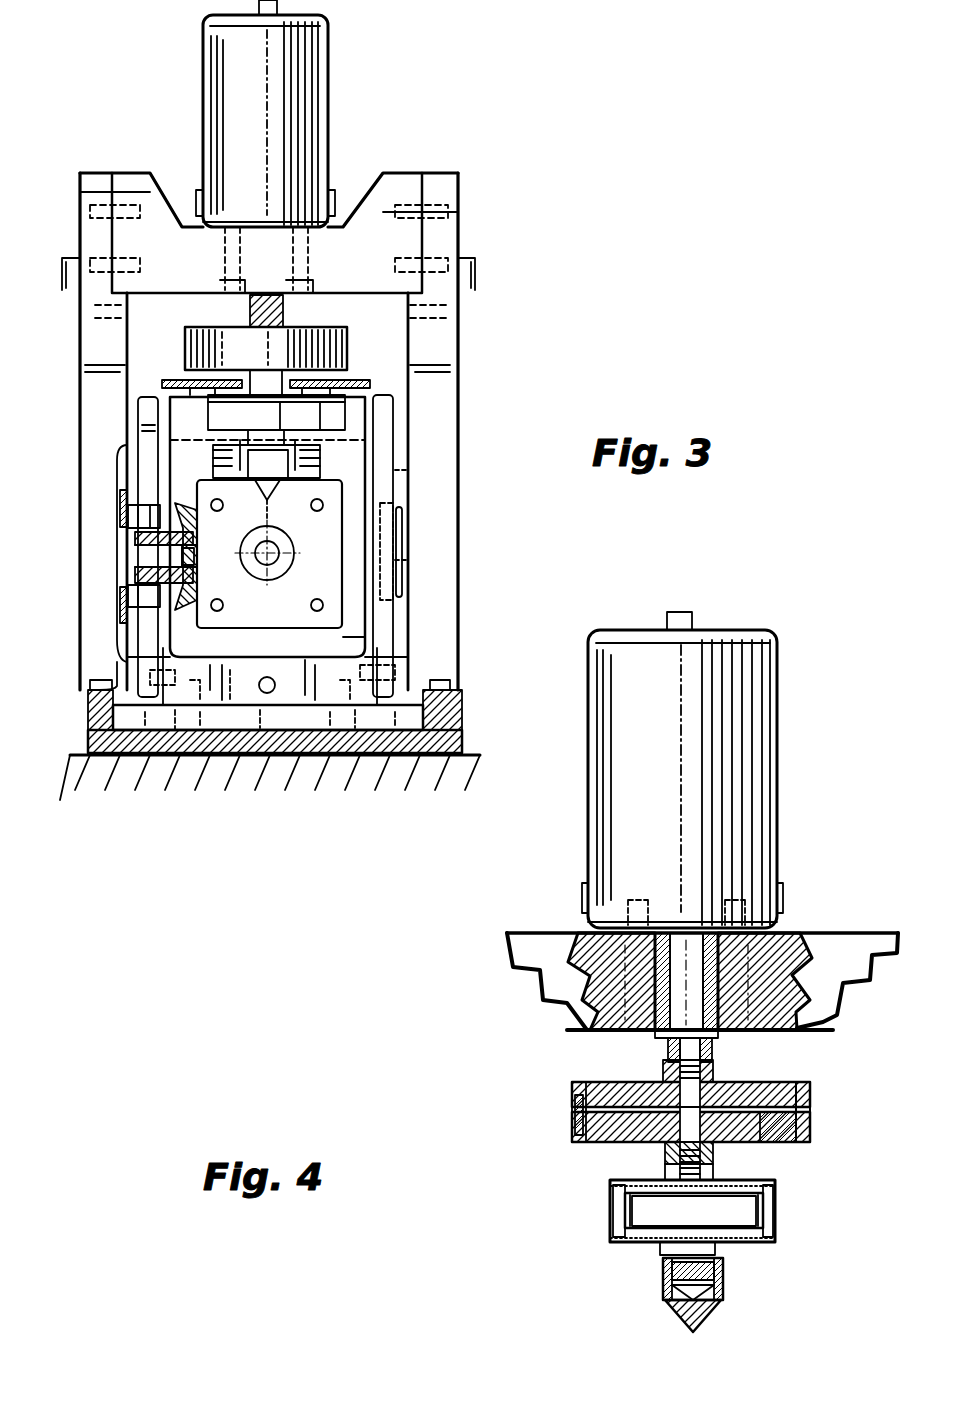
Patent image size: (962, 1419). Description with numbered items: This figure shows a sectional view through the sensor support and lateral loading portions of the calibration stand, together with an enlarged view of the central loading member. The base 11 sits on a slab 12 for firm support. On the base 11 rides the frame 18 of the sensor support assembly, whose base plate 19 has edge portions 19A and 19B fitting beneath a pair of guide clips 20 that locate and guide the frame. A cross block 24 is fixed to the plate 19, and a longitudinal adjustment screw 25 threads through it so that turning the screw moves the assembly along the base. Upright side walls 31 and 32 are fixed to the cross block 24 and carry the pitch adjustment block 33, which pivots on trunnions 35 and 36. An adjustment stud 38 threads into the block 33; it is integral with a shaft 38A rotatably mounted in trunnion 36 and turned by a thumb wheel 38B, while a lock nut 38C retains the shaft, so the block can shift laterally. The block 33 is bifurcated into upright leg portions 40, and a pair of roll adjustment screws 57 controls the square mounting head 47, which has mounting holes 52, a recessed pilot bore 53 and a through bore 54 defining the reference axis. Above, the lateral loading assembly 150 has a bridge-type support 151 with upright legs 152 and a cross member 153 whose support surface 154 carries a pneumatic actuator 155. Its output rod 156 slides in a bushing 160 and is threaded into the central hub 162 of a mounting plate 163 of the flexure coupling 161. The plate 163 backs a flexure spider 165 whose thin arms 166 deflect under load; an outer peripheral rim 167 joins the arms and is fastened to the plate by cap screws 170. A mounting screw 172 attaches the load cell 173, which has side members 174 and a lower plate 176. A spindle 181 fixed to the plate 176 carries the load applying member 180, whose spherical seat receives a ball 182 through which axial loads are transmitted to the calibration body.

In FIG. 3, the base 11 is at (170, 745).
In FIG. 3, the slab 12 is at (470, 760).
In FIG. 3, the frame structure 18 is at (413, 467).
In FIG. 3, the base plate 19 is at (297, 690).
In FIG. 3, the edge portion 19A is at (415, 712).
In FIG. 3, the edge portion 19B is at (130, 720).
In FIG. 3, the guide clips 20 is at (100, 680).
In FIG. 3, the cross block 24 is at (290, 720).
In FIG. 3, the longitudinal adjustment screw 25 is at (262, 692).
In FIG. 3, the upright side wall 31 is at (385, 405).
In FIG. 3, the upright side wall 32 is at (142, 408).
In FIG. 3, the pitch adjustment block 33 is at (385, 492).
In FIG. 3, the trunnion 35 is at (400, 575).
In FIG. 3, the trunnion 36 is at (140, 575).
In FIG. 3, the adjustment stud 38 is at (210, 528).
In FIG. 3, the shaft 38A is at (140, 553).
In FIG. 3, the thumb wheel 38B is at (118, 490).
In FIG. 3, the lock nut 38C is at (229, 556).
In FIG. 3, the upright leg portions 40 is at (190, 465).
In FIG. 3, the mounting head 47 is at (345, 635).
In FIG. 3, the mounting holes 52 is at (315, 607).
In FIG. 3, the recessed pilot bore 53 is at (278, 575).
In FIG. 3, the through bore 54 is at (275, 548).
In FIG. 3, the roll adjustment screws 57 is at (345, 378).
In FIG. 3, the lateral loading assembly 150 is at (386, 124).
In FIG. 3, the bridge-type support 151 is at (420, 238).
In FIG. 3, the upright legs 152 is at (80, 334).
In FIG. 3, the cross member 153 is at (388, 180).
In FIG. 3, the support surface 154 is at (186, 198).
In FIG. 3, the pneumatic actuator 155 is at (318, 82).
In FIG. 3, the output rod 156 is at (280, 310).
In FIG. 4, the output rod 156 is at (680, 950).
In FIG. 4, the bushing 160 is at (668, 895).
In FIG. 3, the flexure coupling 161 is at (185, 358).
In FIG. 4, the flexure coupling 161 is at (728, 1082).
In FIG. 4, the central hub 162 is at (662, 1062).
In FIG. 4, the mounting plate 163 is at (775, 1082).
In FIG. 4, the flexure spider 165 is at (780, 1145).
In FIG. 4, the arms 166 is at (660, 1145).
In FIG. 4, the outer peripheral rim 167 is at (575, 1112).
In FIG. 4, the cap screws 170 is at (812, 1094).
In FIG. 4, the mounting screw 172 is at (694, 1210).
In FIG. 4, the load cell 173 is at (773, 1252).
In FIG. 4, the side members 174 is at (612, 1205).
In FIG. 4, the lower plate 176 is at (615, 1185).
In FIG. 4, the load applying member 180 is at (718, 1305).
In FIG. 4, the spindle 181 is at (725, 1252).
In FIG. 4, the ball 182 is at (690, 1295).